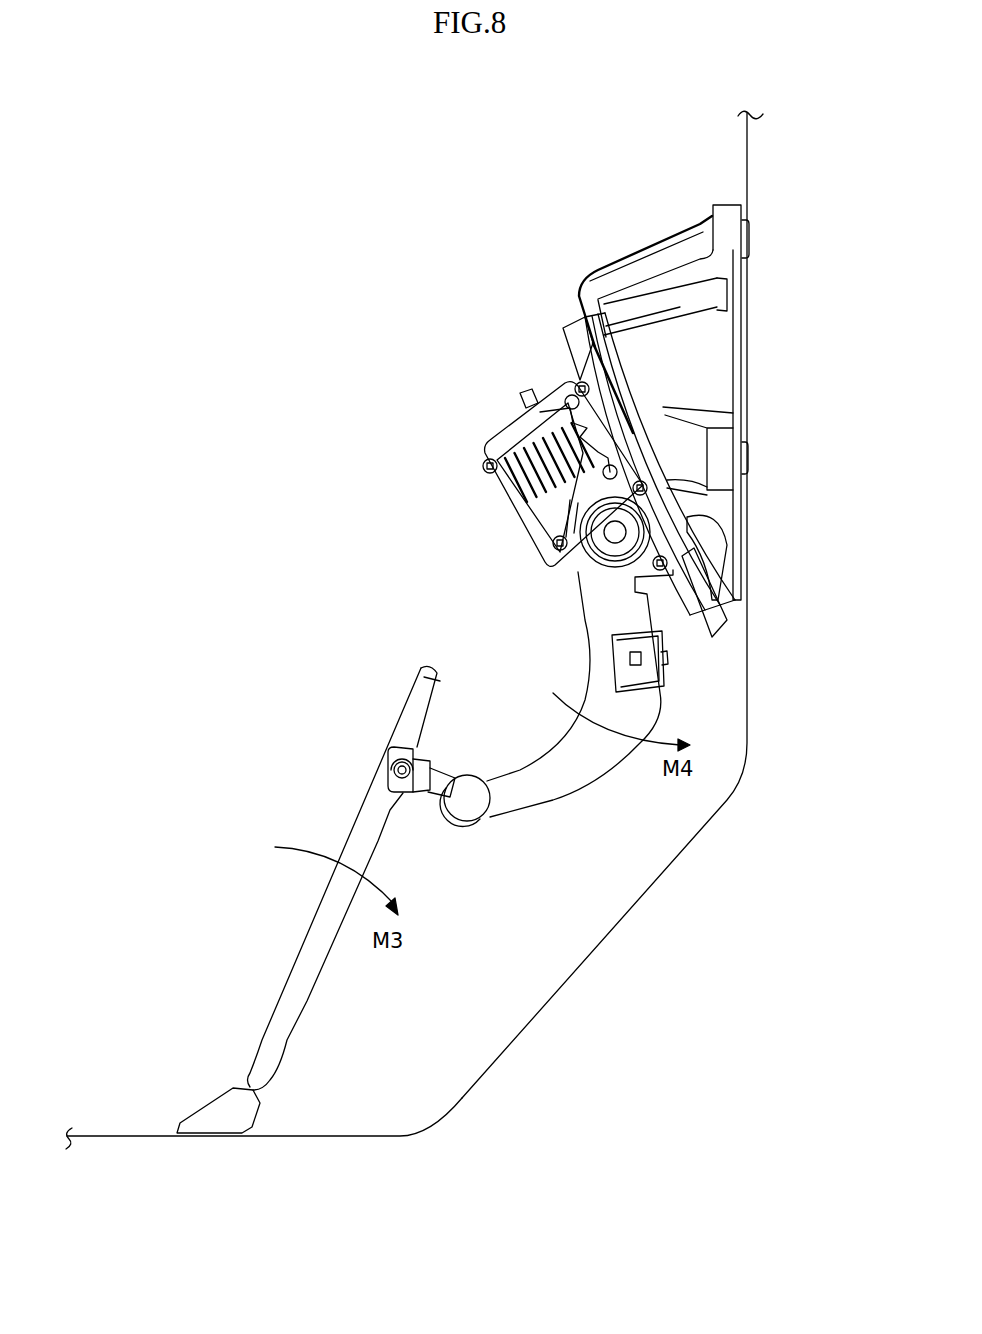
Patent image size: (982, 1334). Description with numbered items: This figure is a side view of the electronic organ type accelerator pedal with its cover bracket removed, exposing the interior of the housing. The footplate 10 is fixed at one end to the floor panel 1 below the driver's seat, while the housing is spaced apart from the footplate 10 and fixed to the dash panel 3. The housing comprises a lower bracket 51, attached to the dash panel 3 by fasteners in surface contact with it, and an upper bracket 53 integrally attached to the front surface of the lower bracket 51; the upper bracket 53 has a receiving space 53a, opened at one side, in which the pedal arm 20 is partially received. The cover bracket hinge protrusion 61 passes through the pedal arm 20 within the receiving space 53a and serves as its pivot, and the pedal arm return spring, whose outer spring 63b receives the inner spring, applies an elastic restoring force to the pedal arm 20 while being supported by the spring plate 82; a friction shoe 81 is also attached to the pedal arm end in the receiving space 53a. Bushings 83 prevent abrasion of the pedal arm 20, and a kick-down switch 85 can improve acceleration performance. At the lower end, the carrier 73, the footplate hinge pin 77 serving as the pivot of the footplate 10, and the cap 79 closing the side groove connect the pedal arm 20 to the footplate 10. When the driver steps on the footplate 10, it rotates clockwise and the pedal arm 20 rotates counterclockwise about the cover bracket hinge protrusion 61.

The floor panel 1 is at (108, 1134).
The dash panel 3 is at (752, 157).
The footplate 10 is at (298, 932).
The pedal arm 20 is at (576, 796).
The lower bracket 51 is at (712, 352).
The upper bracket 53 is at (567, 357).
The receiving space 53a is at (523, 432).
The cover bracket hinge protrusion 61 is at (618, 530).
The outer spring 63b is at (500, 434).
The carrier 73 is at (424, 800).
The footplate hinge pin 77 is at (396, 769).
The cap 79 is at (470, 808).
The friction shoe 81 is at (550, 407).
The spring plate 82 is at (595, 465).
The bushings 83 is at (640, 529).
The kick-down switch 85 is at (666, 658).